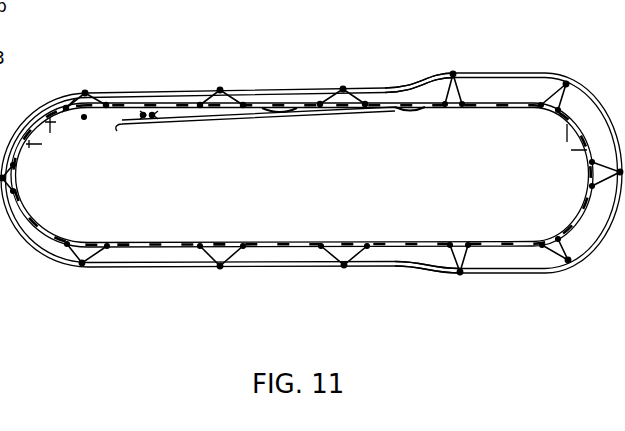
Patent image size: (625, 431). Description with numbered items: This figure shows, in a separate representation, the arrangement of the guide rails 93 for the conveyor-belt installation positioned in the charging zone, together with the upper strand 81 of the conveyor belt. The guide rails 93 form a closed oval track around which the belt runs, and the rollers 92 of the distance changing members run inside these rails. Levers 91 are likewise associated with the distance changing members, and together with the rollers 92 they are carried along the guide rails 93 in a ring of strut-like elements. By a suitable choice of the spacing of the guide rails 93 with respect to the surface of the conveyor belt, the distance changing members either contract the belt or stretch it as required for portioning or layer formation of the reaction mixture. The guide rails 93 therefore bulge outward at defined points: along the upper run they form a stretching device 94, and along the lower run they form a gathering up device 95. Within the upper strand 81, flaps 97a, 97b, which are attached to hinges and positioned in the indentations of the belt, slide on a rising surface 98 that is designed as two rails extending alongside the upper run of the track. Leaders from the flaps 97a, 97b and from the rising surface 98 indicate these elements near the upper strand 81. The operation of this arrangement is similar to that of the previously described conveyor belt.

The upper strand 81 is at (84, 118).
The levers 91 is at (361, 105).
The rollers 92 is at (220, 90).
The guide rails 93 is at (532, 76).
The stretching device 94 is at (432, 78).
The gathering up device 95 is at (428, 263).
The flap 97a is at (143, 115).
The flap 97b is at (152, 115).
The rising surface 98 is at (207, 123).